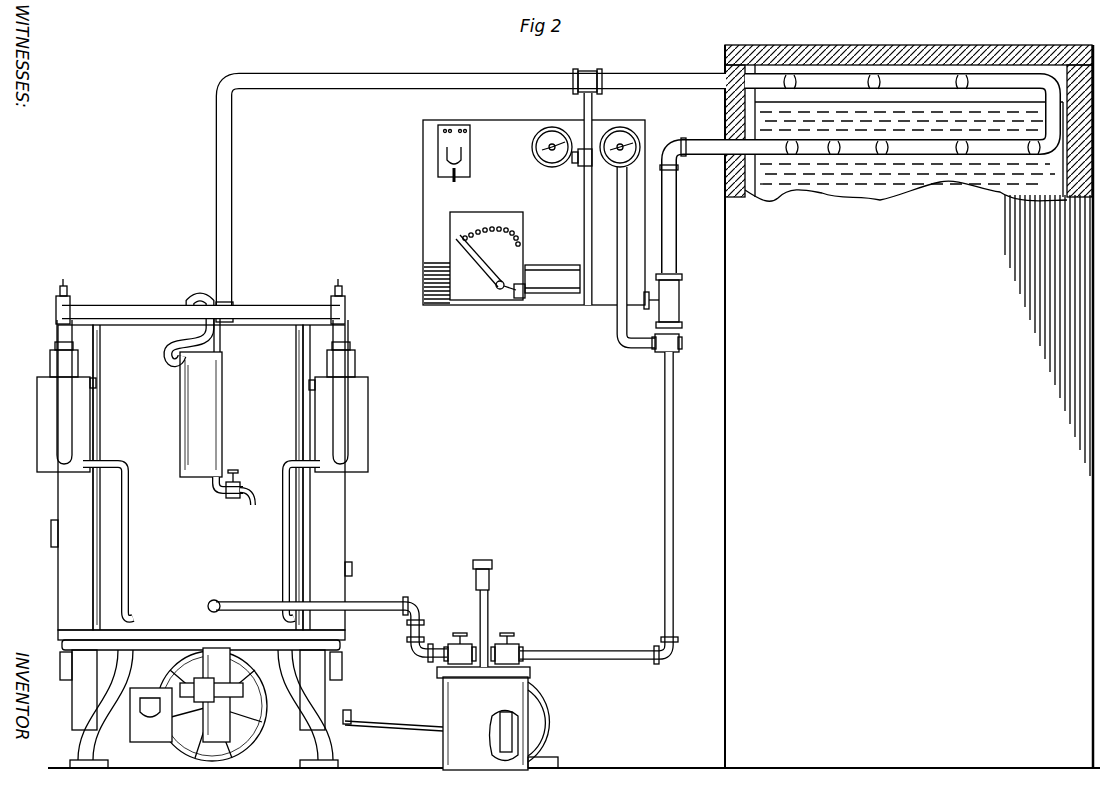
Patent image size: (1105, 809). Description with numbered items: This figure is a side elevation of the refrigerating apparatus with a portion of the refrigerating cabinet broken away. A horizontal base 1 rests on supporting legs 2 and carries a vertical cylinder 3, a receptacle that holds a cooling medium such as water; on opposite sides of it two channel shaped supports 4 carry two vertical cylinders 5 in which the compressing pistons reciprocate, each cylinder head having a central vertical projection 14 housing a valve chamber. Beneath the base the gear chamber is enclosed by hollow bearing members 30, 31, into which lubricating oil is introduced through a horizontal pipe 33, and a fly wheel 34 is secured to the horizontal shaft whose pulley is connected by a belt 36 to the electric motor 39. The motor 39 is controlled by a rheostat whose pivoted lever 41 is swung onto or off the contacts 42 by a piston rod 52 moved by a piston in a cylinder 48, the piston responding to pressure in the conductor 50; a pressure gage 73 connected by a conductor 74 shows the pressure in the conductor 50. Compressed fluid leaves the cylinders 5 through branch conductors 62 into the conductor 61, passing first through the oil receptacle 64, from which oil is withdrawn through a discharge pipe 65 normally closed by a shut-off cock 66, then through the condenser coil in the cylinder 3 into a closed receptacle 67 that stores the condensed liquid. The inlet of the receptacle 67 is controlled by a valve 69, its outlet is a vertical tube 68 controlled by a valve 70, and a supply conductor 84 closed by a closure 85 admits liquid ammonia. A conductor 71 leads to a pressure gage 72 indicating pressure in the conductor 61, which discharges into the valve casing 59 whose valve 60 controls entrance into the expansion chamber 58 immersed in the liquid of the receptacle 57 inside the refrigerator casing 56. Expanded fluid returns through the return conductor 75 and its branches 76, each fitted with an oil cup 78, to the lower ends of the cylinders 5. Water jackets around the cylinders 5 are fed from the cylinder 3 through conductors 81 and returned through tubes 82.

The horizontal base 1 is at (172, 630).
The supporting legs 2 is at (178, 662).
The vertical cylinder 3 is at (198, 477).
The channel shaped supports 4 is at (201, 524).
The vertical cylinders 5 is at (37, 405).
The central vertical projection 14 is at (52, 360).
The upper bearing member 30 is at (225, 656).
The lower bearing member 31 is at (252, 740).
The horizontal pipe 33 is at (215, 649).
The fly wheel 34 is at (156, 750).
The belt 36 is at (381, 692).
The electric motor 39 is at (549, 706).
The pivoted lever 41 is at (485, 264).
The contacts 42 is at (499, 226).
The cylinder 48 is at (552, 266).
The conductor 50 is at (584, 205).
The piston rod 52 is at (517, 300).
The refrigerator casing 56 is at (909, 406).
The receptacle 57 is at (770, 196).
The expansion chamber 58 is at (702, 80).
The valve casing 59 is at (680, 300).
The valve 60 is at (630, 338).
The conductor 61 is at (217, 350).
The branch conductors 62 is at (145, 305).
The oil receptacle 64 is at (201, 414).
The discharge pipe 65 is at (241, 500).
The shut-off cock 66 is at (234, 469).
The closed receptacle 67 is at (465, 707).
The vertical tube 68 is at (492, 730).
The valve 69 is at (460, 632).
The valve 70 is at (508, 632).
The conductor 71 is at (618, 326).
The pressure gage 72 is at (630, 128).
The pressure gage 73 is at (553, 126).
The conductor 74 is at (579, 166).
The return conductor 75 is at (454, 80).
The branches 76 is at (131, 320).
The oil cup 78 is at (63, 284).
The conductor 81 is at (128, 494).
The tubes 82 is at (97, 384).
The supply conductor 84 is at (490, 606).
The closure 85 is at (488, 560).